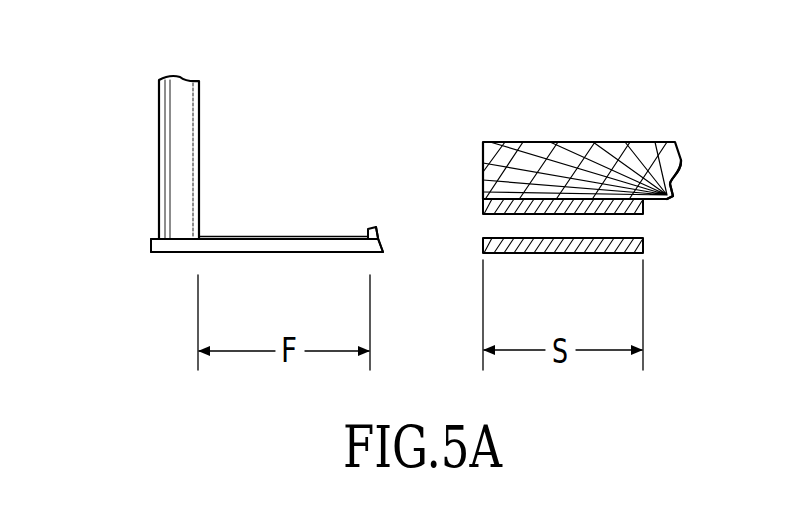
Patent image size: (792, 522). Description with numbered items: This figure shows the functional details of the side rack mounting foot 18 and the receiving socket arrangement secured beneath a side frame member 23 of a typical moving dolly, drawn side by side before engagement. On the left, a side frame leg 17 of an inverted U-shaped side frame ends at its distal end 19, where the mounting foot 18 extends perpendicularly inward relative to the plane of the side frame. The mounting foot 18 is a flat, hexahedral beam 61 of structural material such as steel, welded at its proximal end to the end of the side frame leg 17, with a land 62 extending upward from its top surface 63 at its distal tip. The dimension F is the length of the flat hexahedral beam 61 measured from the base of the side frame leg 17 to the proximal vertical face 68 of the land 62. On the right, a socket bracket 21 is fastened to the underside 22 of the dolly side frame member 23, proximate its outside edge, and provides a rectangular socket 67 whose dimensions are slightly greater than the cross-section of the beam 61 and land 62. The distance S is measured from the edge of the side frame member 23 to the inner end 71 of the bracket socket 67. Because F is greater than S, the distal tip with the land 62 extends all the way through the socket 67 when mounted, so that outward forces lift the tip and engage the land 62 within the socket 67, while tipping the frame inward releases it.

The side frame leg 17 is at (159, 117).
The mounting foot 18 is at (237, 224).
The distal end 19 is at (151, 245).
The flat hexahedral beam 61 is at (267, 253).
The land 62 is at (376, 227).
The top surface 63 is at (290, 238).
The proximal vertical face 68 is at (368, 231).
The socket 67 is at (480, 225).
The side frame member 23 is at (603, 142).
The underside 22 is at (668, 200).
The inner end 71 is at (643, 206).
The socket bracket 21 is at (643, 246).